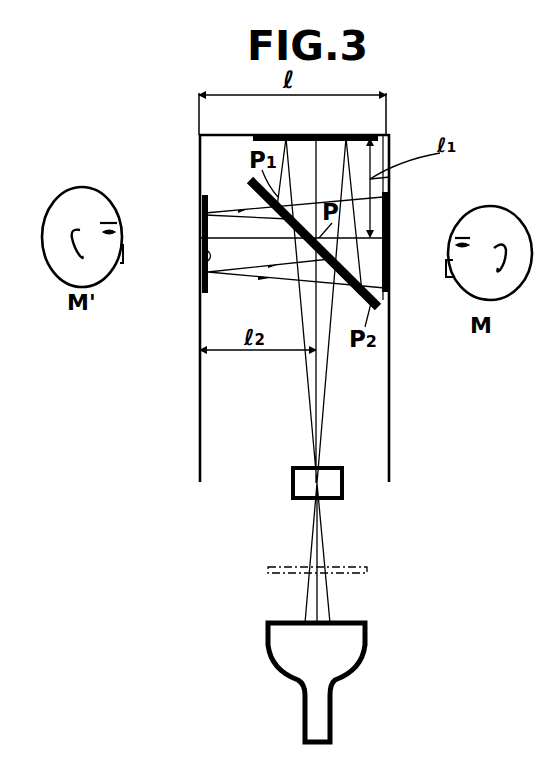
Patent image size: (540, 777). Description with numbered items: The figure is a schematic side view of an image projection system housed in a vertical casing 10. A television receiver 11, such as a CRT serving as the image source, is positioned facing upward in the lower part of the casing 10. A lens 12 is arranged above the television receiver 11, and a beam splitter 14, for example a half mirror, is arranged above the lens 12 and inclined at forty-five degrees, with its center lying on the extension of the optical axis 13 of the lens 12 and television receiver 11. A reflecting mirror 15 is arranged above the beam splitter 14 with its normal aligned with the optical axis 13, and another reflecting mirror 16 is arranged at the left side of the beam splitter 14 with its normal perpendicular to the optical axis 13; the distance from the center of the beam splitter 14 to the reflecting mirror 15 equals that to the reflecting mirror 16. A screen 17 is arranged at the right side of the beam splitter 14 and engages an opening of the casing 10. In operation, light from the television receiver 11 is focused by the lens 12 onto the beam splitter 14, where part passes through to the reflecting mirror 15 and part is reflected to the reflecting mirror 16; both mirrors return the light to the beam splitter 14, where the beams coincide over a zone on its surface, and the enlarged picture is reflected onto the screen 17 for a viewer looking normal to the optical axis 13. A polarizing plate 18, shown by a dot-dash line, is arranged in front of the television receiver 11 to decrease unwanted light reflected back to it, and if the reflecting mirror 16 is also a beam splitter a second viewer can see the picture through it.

The casing 10 is at (199, 147).
The television receiver 11 is at (342, 645).
The lens 12 is at (335, 481).
The optical axis 13 is at (314, 383).
The beam splitter 14 is at (252, 192).
The reflecting mirror 15 is at (335, 142).
The reflecting mirror 16 is at (203, 265).
The screen 17 is at (385, 230).
The polarizing plate 18 is at (365, 573).